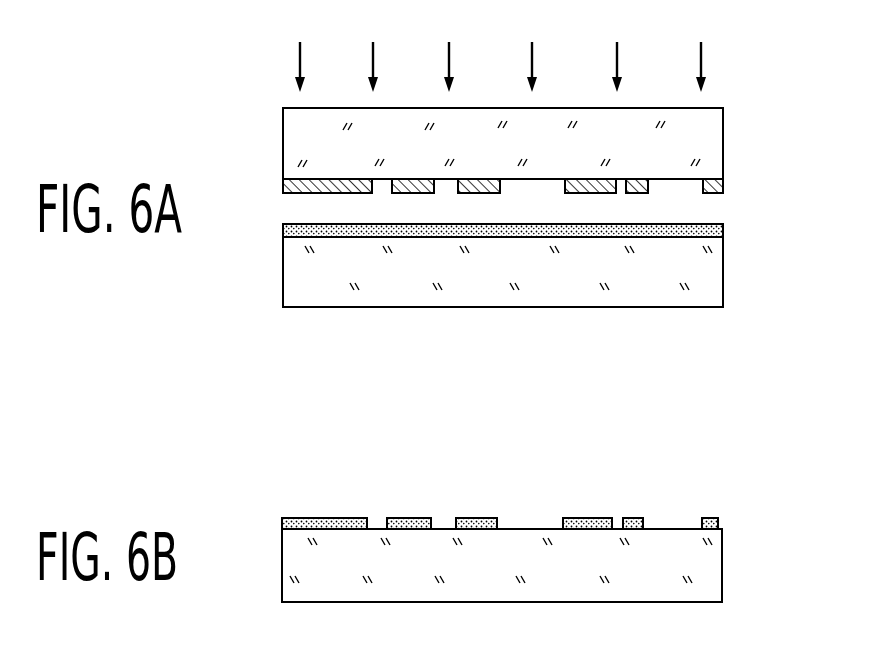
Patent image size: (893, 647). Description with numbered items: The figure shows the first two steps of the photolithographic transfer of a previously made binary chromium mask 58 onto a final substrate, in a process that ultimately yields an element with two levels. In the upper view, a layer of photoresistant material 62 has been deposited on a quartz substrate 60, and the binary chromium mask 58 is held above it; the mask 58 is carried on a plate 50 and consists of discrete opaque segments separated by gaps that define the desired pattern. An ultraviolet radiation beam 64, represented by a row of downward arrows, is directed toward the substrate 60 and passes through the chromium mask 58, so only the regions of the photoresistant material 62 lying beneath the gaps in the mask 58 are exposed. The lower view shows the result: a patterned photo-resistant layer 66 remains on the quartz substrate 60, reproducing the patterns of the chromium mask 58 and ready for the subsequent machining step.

In FIG. 6A, the ultraviolet radiation beam 64 is at (702, 60).
In FIG. 6A, the transparent substrate 50 is at (713, 134).
In FIG. 6A, the binary chromium mask 58 is at (724, 181).
In FIG. 6A, the layer of photoresistant material 62 is at (724, 230).
In FIG. 6A, the quartz substrate 60 is at (708, 288).
In FIG. 6B, the quartz substrate 60 is at (713, 570).
In FIG. 6B, the photo-resistant layer 66 is at (719, 522).